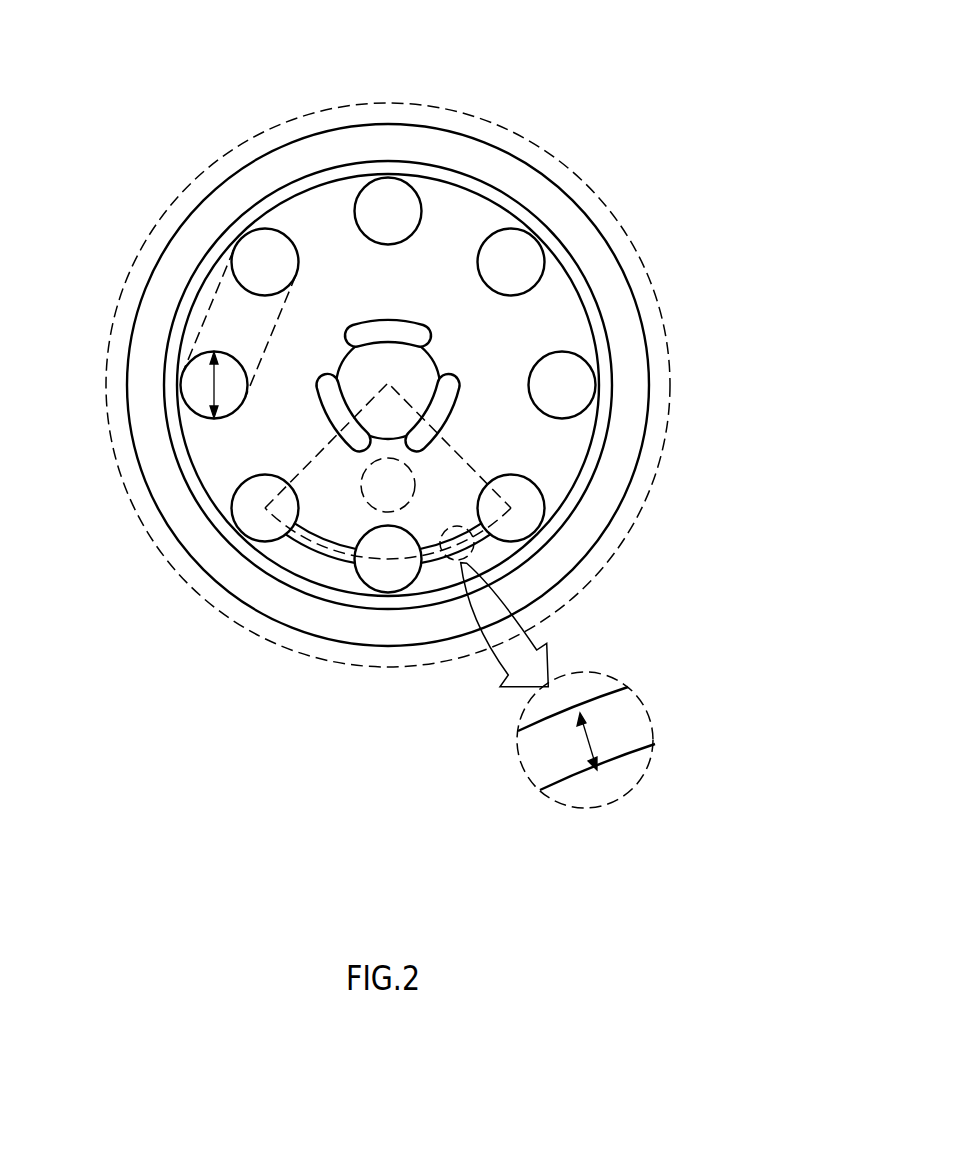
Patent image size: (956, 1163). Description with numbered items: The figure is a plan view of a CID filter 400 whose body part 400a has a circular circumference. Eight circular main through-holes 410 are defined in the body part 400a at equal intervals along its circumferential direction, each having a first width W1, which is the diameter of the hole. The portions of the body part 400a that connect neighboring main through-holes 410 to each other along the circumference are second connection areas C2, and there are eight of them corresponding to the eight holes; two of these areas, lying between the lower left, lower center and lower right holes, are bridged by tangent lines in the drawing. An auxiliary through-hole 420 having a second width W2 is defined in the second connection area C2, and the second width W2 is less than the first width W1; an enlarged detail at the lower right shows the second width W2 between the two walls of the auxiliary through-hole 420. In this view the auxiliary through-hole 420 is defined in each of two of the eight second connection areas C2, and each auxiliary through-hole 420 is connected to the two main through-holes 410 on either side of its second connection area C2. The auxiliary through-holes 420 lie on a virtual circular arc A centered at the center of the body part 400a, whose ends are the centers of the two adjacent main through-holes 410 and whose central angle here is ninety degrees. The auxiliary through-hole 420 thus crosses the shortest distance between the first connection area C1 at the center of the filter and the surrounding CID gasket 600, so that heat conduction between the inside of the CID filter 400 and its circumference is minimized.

The CID filter 400 is at (388, 347).
The body part 400a is at (501, 163).
The main through-hole 410 is at (397, 204).
The auxiliary through-hole 420 is at (320, 550).
The CID gasket 600 is at (611, 206).
The circular arc A is at (393, 558).
The first connection area C1 is at (417, 483).
The second connection area C2 is at (236, 333).
The first width W1 is at (213, 384).
The second width W2 is at (588, 742).